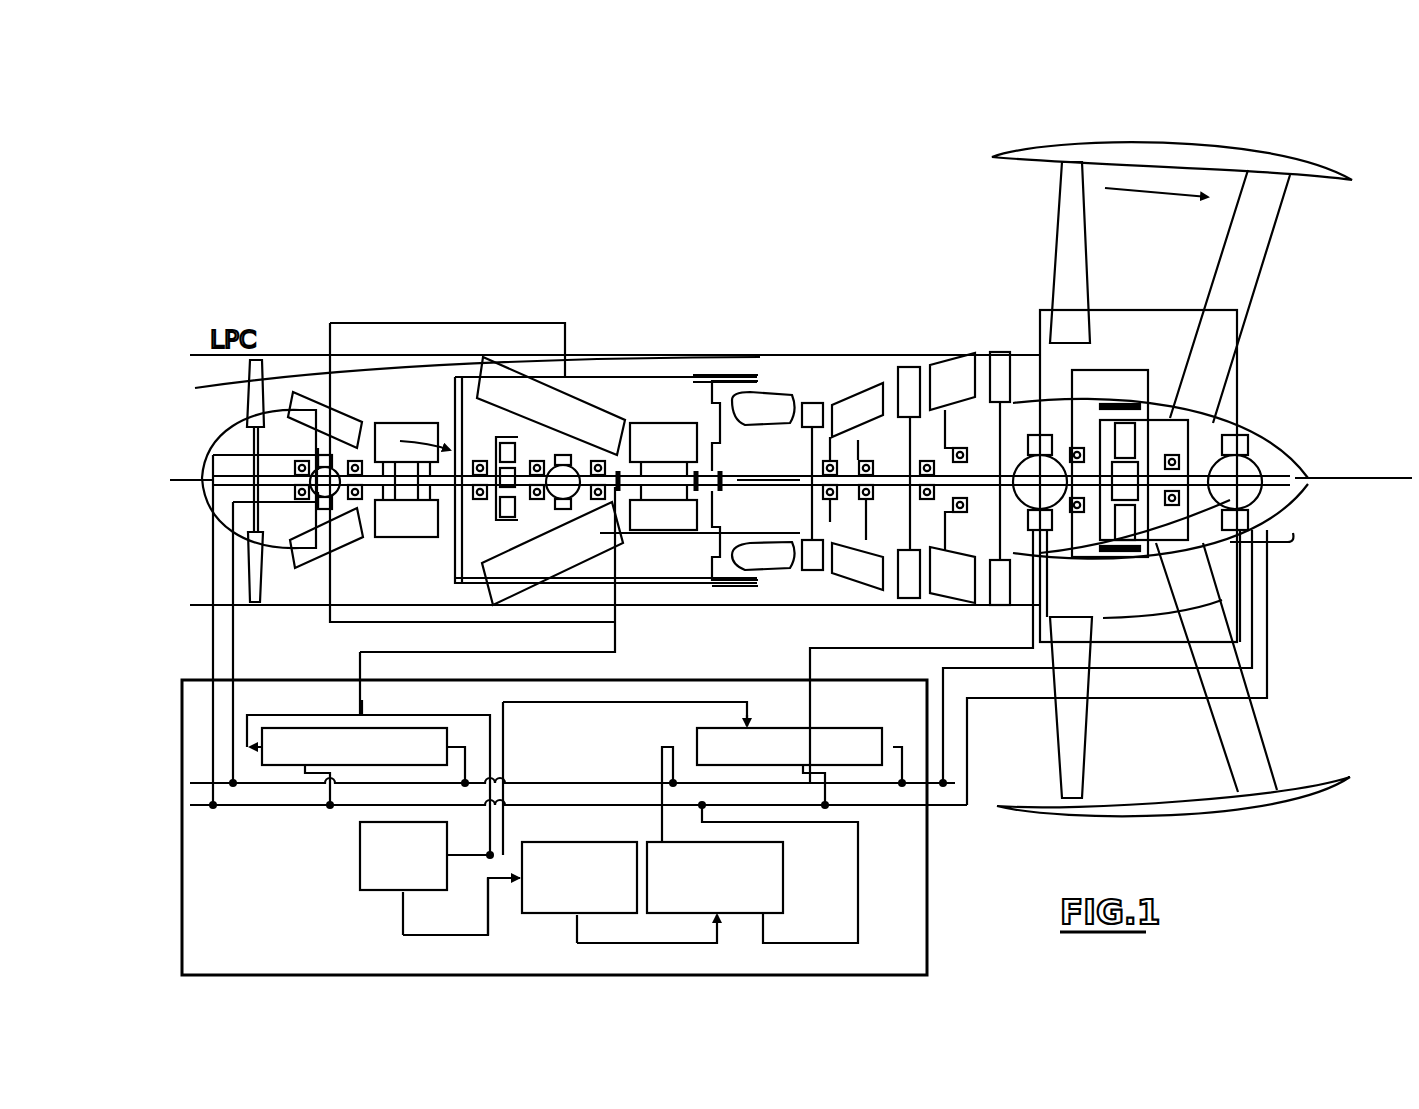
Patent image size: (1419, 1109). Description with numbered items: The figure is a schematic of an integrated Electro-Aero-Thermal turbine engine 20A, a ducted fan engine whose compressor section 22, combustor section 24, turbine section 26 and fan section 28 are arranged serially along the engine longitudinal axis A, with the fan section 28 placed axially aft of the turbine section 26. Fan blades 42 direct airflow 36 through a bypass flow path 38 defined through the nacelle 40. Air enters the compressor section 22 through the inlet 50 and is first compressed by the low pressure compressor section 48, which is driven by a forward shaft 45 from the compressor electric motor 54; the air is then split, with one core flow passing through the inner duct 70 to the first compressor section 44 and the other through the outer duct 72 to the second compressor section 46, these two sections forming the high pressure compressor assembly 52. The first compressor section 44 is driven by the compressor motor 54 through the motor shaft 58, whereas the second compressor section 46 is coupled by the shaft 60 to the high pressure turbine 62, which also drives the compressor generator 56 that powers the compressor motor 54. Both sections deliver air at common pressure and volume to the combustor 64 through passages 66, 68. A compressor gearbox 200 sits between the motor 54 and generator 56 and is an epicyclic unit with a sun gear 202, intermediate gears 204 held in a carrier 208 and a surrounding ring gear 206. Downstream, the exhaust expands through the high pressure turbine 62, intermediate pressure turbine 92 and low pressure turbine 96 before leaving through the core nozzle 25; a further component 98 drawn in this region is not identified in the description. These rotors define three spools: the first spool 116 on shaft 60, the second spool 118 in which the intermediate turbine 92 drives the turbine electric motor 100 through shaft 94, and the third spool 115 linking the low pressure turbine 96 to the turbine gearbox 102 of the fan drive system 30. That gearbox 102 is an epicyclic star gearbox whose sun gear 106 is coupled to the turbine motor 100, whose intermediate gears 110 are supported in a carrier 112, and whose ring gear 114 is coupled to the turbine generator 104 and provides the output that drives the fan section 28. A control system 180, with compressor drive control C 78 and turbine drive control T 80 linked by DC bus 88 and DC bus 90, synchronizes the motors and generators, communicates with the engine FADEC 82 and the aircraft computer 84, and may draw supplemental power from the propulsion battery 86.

The engine 20A is at (462, 186).
The compressor section 22 is at (225, 230).
The combustor section 24 is at (725, 230).
The turbine section 26 is at (805, 230).
The fan section 28 is at (1040, 122).
The fan drive system 30 is at (895, 284).
The airflow 36 is at (1188, 195).
The bypass flow path 38 is at (1140, 252).
The nacelle 40 is at (1226, 160).
The fan blades 42 is at (1076, 193).
The first compressor section 44 is at (388, 432).
The forward shaft 45 is at (272, 500).
The second compressor section 46 is at (706, 447).
The low pressure compressor section 48 is at (258, 350).
The inlet 50 is at (160, 437).
The high pressure compressor assembly 52 is at (280, 284).
The compressor electric motor 54 is at (318, 555).
The compressor generator 56 is at (555, 505).
The motor shaft 58 is at (410, 502).
The shaft 60 is at (790, 478).
The high pressure turbine 62 is at (810, 570).
The combustor 64 is at (764, 396).
The passage 66 is at (656, 600).
The passage 68 is at (712, 568).
The inner duct 70 is at (338, 555).
The outer duct 72 is at (528, 360).
The compressor drive control C 78 is at (382, 728).
The turbine drive control T 80 is at (830, 728).
The engine FADEC 82 is at (360, 870).
The aircraft computer 84 is at (550, 913).
The propulsion battery 86 is at (783, 878).
The DC bus 88 is at (598, 802).
The DC bus 90 is at (620, 780).
The intermediate pressure turbine 92 is at (900, 580).
The shaft 94 is at (1083, 560).
The low pressure turbine 96 is at (1000, 606).
The turbine blade 98 is at (985, 428).
The turbine electric motor 100 is at (1262, 468).
The turbine gearbox 102 is at (1225, 500).
The turbine generator 104 is at (945, 462).
The sun gear 106 is at (1132, 470).
The intermediate gears 110 is at (1135, 440).
The carrier 112 is at (1225, 520).
The ring gear 114 is at (1013, 403).
The third spool 115 is at (1060, 413).
The first spool 116 is at (728, 600).
The second spool 118 is at (1168, 617).
The control system 180 is at (213, 913).
The compressor gearbox 200 is at (548, 420).
The sun gear 202 is at (470, 560).
The intermediate gears 204 is at (503, 530).
The ring gear 206 is at (530, 530).
The carrier 208 is at (500, 440).
The core nozzle 25 is at (1240, 598).
The engine longitudinal axis A is at (1357, 478).